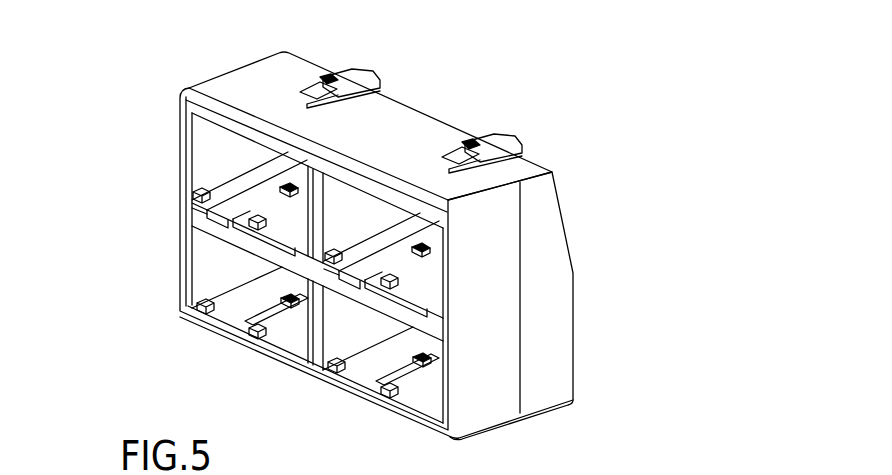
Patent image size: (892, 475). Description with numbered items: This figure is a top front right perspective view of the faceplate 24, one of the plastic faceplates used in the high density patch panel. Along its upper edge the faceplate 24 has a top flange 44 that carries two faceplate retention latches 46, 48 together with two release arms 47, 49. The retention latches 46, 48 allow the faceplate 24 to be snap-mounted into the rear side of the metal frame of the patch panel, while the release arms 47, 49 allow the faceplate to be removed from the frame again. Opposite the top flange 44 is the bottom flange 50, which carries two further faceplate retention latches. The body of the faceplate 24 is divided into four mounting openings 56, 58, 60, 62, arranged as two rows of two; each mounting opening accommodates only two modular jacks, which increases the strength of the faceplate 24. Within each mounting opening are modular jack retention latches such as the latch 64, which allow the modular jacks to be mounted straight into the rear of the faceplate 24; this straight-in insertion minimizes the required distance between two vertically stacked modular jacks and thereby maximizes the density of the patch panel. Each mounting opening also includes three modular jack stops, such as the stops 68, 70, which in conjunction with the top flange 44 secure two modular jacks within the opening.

The faceplate 24 is at (180, 188).
The top flange 44 is at (238, 85).
The faceplate retention latch 46 is at (323, 80).
The release arm 47 is at (368, 78).
The faceplate retention latch 48 is at (467, 147).
The release arm 49 is at (517, 143).
The bottom flange 50 is at (297, 335).
The mounting opening 56 is at (232, 142).
The mounting opening 58 is at (353, 217).
The mounting opening 60 is at (222, 262).
The mounting opening 62 is at (365, 330).
The modular jack retention latch 64 is at (290, 187).
The modular jack stop 68 is at (198, 307).
The modular jack stop 70 is at (225, 332).